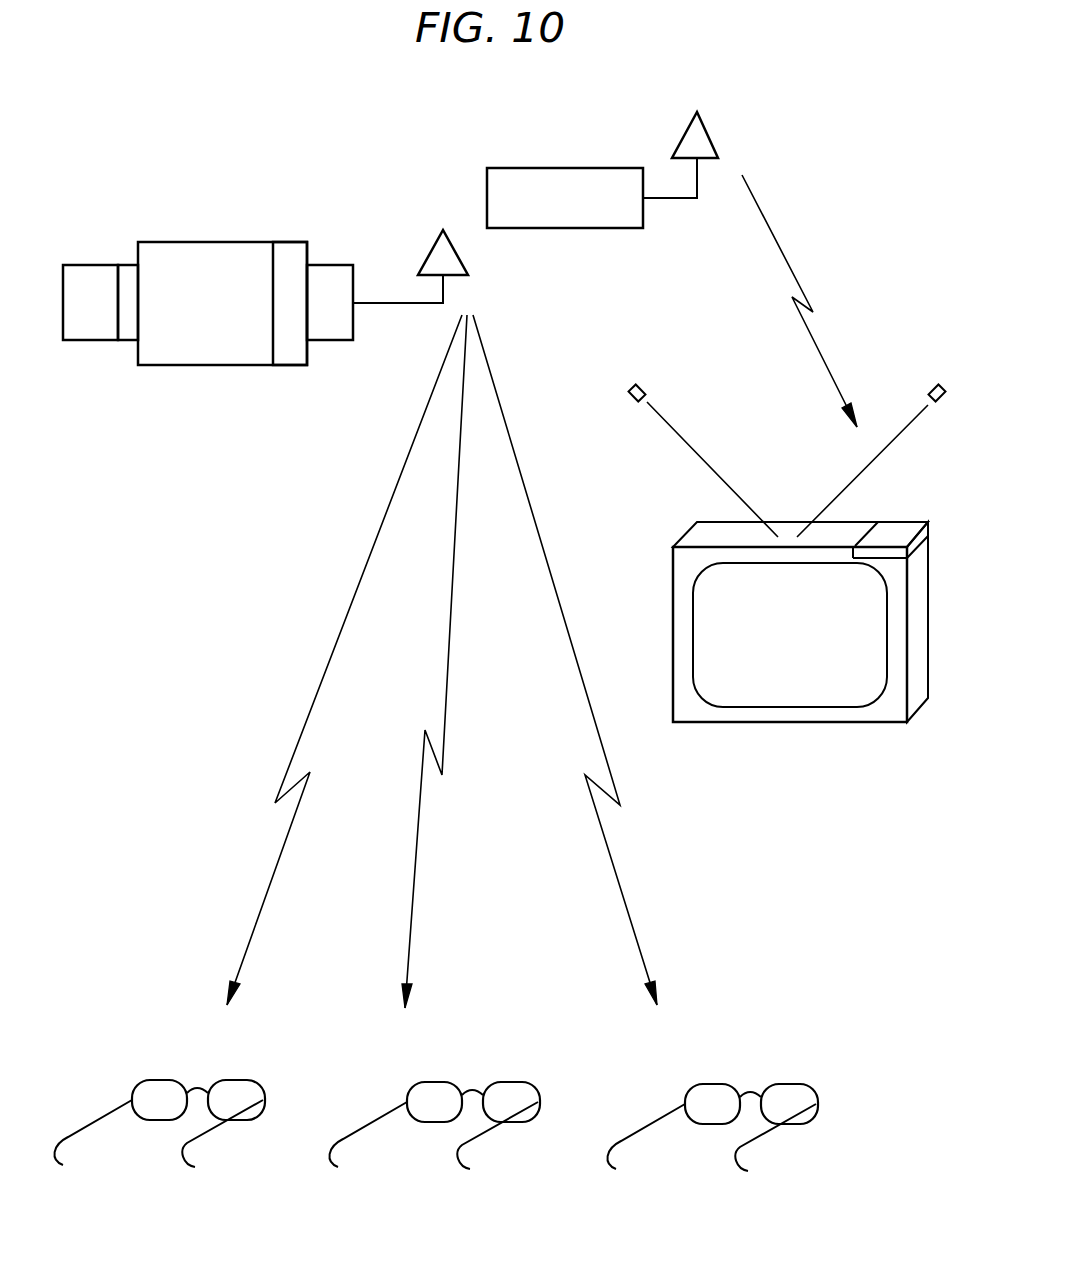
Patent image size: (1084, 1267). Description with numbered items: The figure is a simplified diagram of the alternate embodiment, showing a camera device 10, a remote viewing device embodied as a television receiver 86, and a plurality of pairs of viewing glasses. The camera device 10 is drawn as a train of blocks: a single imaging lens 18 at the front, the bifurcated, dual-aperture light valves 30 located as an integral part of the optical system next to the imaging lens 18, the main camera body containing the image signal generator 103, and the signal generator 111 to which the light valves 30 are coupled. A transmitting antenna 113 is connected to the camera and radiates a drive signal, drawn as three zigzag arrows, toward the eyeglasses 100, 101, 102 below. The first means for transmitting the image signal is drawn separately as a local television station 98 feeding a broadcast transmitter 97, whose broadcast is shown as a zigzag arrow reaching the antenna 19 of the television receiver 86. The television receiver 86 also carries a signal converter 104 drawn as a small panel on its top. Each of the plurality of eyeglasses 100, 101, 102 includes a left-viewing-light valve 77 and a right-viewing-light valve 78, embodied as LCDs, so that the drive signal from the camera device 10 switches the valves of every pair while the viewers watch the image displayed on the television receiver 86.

The camera device 10 is at (210, 242).
The imaging lens 18 is at (85, 265).
The bifurcated, dual-aperture light valves 30 is at (128, 265).
The image signal generator 103 is at (288, 242).
The signal generator 111 is at (337, 265).
The transmitting antenna 113 is at (432, 248).
The local television station 98 is at (563, 168).
The broadcast transmitter 97 is at (712, 130).
The antenna 19 is at (897, 438).
The signal converter 104 is at (928, 528).
The television receiver 86 is at (673, 628).
The left-viewing-light valve 77 is at (159, 1080).
The right-viewing-light valve 78 is at (237, 1080).
The eyeglasses 100 is at (72, 1140).
The eyeglasses 101 is at (433, 1129).
The eyeglasses 102 is at (711, 1131).